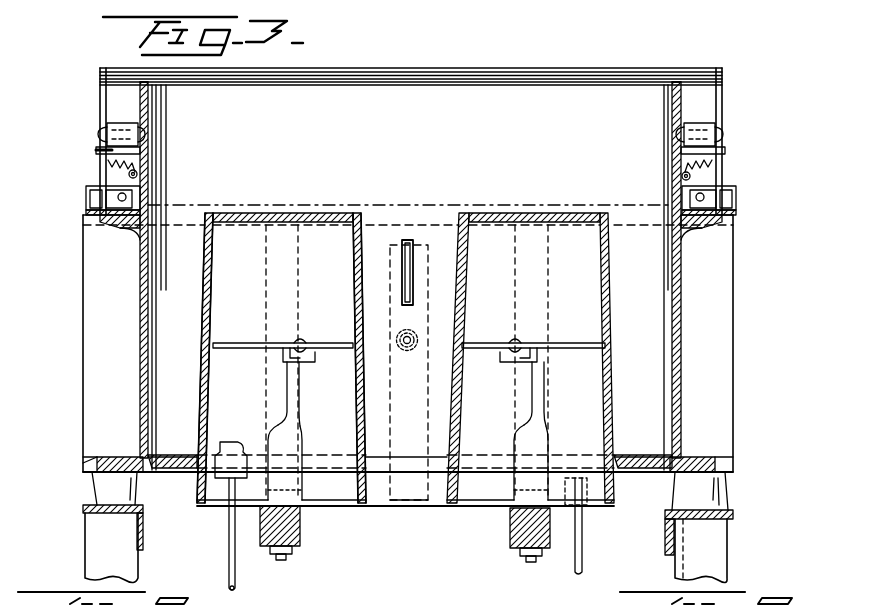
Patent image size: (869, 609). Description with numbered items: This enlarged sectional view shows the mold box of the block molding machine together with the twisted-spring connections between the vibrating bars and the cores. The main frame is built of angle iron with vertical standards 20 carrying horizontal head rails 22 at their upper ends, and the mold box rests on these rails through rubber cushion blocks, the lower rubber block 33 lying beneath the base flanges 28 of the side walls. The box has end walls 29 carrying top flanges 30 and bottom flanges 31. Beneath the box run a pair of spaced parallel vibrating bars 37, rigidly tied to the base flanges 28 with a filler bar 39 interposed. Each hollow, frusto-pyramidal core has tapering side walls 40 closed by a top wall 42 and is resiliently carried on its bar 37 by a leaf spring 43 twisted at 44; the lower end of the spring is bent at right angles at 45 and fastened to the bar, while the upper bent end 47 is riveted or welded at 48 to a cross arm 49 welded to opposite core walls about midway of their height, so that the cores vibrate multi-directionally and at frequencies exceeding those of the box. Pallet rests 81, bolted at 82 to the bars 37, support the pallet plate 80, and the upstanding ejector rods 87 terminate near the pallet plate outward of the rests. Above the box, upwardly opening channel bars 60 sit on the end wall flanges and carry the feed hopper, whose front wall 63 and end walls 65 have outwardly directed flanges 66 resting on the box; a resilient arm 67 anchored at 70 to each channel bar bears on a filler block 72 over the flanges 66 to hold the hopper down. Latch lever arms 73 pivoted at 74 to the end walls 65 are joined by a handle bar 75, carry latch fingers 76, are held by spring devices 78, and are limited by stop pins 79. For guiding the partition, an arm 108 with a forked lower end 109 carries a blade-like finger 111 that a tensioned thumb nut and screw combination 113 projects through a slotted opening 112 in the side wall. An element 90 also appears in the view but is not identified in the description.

The vertical standards 20 is at (98, 563).
The horizontal head rails 22 is at (97, 497).
The bottom flanges of the side walls 28 is at (90, 467).
The end walls 29 is at (140, 298).
The top flanges of the end walls 30 is at (108, 223).
The bottom flanges of the end walls 31 is at (110, 463).
The rubber block 33 is at (137, 480).
The vibrating bars 37 is at (300, 527).
The filler bar 39 is at (250, 584).
The tapering side walls 40 is at (213, 307).
The top wall 42 is at (256, 212).
The twisted leaf spring 43 is at (282, 378).
The twist 44 is at (283, 413).
The right-angle bent lower end 45 is at (405, 496).
The right-angle bent upper end 47 is at (307, 354).
The securing connection 48 is at (302, 338).
The cross arm 49 is at (240, 340).
The channel bars 60 is at (90, 197).
The front wall of the hopper 63 is at (450, 97).
The end walls of the hopper 65 is at (140, 92).
The outwardly directed flanges 66 is at (126, 232).
The resilient arm 67 is at (112, 170).
The anchorage 70 is at (728, 212).
The filler block 72 is at (232, 205).
The latch lever arms 73 is at (100, 80).
The pivot 74 is at (118, 127).
The handle bar 75 is at (553, 78).
The latch finger 76 is at (107, 222).
The spring devices 78 is at (130, 168).
The stop pins 79 is at (100, 149).
The pallet plate 80 is at (170, 456).
The pallet rests 81 is at (386, 492).
The bolted connection 82 is at (283, 558).
The ejector rods 87 is at (227, 543).
The left plate 90 is at (105, 211).
The guide arm 108 is at (414, 372).
The fork 109 is at (413, 456).
The blade-like finger 111 is at (404, 290).
The slotted opening 112 is at (413, 270).
The thumb nut and screw combination 113 is at (435, 327).